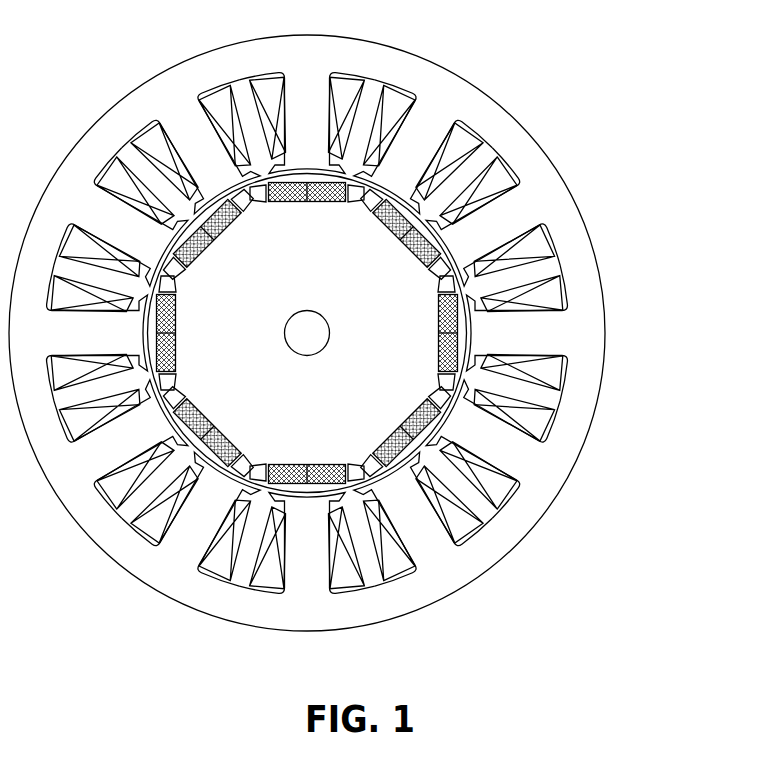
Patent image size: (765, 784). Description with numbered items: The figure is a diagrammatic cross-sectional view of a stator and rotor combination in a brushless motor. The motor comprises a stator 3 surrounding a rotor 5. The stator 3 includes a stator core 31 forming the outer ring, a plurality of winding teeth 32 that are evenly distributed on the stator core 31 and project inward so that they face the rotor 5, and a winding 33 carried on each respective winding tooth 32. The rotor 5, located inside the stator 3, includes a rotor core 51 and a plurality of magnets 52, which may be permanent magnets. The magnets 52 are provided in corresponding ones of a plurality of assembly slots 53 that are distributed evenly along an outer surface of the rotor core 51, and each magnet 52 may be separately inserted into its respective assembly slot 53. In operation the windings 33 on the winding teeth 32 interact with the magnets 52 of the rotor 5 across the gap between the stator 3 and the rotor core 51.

The stator 3 is at (350, 333).
The stator core 31 is at (547, 181).
The winding teeth 32 is at (490, 230).
The winding 33 is at (559, 261).
The rotor 5 is at (419, 367).
The rotor core 51 is at (387, 375).
The magnets 52 is at (412, 448).
The assembly slots 53 is at (370, 468).